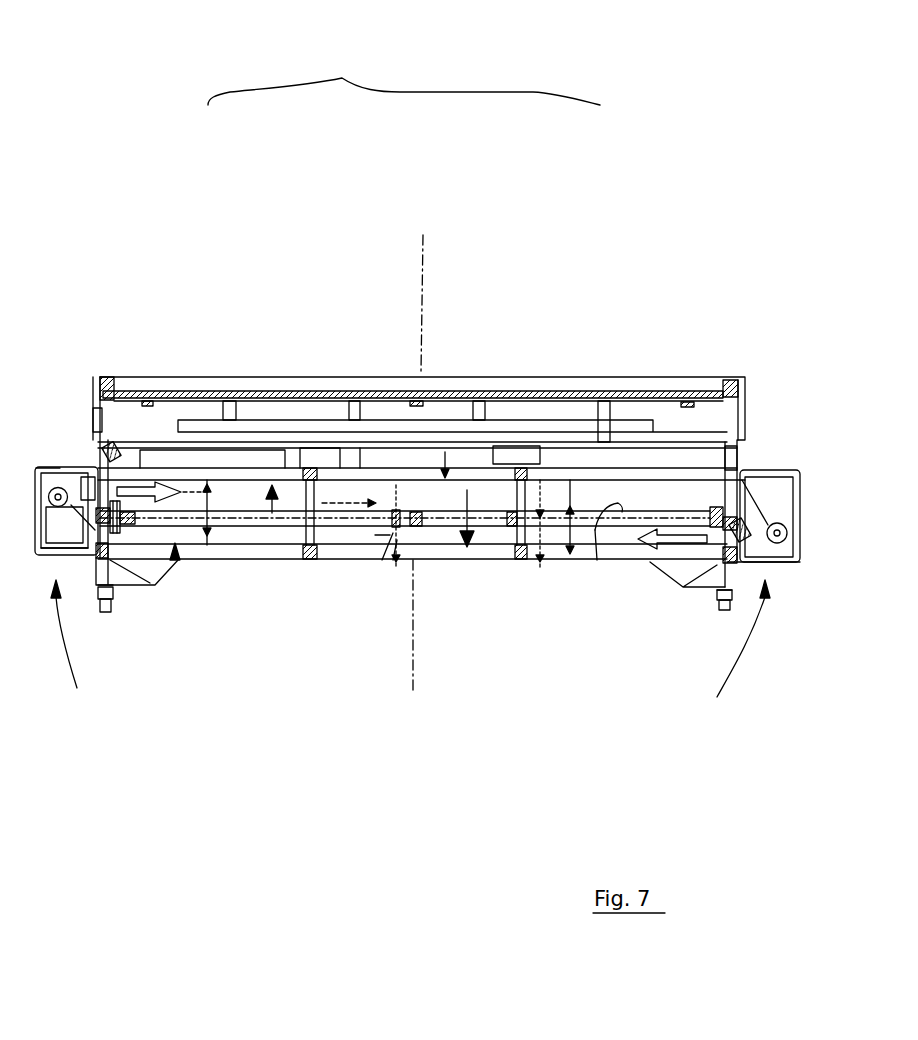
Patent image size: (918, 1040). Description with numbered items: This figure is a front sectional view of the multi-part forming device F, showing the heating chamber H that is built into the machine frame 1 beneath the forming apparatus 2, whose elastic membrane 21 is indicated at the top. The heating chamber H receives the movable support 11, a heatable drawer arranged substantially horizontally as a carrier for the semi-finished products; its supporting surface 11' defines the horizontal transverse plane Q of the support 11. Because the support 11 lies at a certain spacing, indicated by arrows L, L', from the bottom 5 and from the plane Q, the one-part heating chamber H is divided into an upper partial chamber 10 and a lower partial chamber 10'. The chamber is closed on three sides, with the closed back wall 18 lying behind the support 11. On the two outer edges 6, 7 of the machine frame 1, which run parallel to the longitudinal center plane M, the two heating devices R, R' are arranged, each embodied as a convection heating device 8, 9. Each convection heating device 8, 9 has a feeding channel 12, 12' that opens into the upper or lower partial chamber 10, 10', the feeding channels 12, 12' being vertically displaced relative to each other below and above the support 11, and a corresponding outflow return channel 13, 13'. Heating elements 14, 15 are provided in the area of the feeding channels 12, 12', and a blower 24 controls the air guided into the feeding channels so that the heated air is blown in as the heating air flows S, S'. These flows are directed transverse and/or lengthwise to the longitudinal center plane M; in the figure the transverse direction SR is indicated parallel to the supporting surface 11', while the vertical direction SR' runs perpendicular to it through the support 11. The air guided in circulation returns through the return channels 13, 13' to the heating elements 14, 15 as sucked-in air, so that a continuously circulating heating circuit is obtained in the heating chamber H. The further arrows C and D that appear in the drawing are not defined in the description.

The forming device F is at (342, 78).
The longitudinal center plane M is at (423, 235).
The machine frame 1 is at (112, 452).
The forming apparatus 2 is at (688, 371).
The bottom 5 is at (380, 535).
The outer edge 6 is at (110, 560).
The outer edge 7 is at (717, 540).
The convection heating device 8 is at (53, 467).
The convection heating device 9 is at (790, 562).
The upper partial chamber 10 is at (452, 384).
The lower partial chamber 10' is at (346, 646).
The support 11 is at (491, 651).
The supporting surface 11' is at (594, 576).
The feeding channel 12 is at (66, 450).
The feeding channel 12' is at (698, 608).
The return channel 13 is at (82, 610).
The return channel 13' is at (763, 462).
The heating element 14 is at (141, 485).
The heating element 15 is at (720, 505).
The back wall 18 is at (667, 495).
The elastic membrane 21 is at (585, 383).
The blower 24 is at (767, 513).
The heating air flow S is at (164, 396).
The heating air flow S' is at (652, 609).
The transverse flow direction SR is at (367, 406).
The vertical flow direction SR' is at (369, 561).
The spacing L is at (493, 404).
The spacing L' is at (383, 615).
The carrier C is at (207, 545).
The drive post D is at (570, 545).
The heating chamber H is at (175, 560).
The horizontal transverse plane Q is at (380, 540).
The heating device R is at (70, 644).
The heating device R' is at (729, 653).